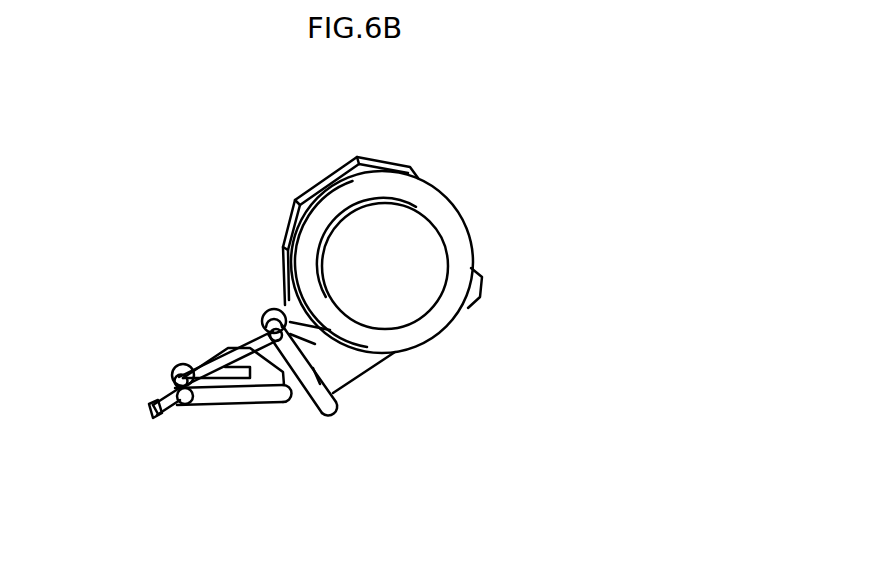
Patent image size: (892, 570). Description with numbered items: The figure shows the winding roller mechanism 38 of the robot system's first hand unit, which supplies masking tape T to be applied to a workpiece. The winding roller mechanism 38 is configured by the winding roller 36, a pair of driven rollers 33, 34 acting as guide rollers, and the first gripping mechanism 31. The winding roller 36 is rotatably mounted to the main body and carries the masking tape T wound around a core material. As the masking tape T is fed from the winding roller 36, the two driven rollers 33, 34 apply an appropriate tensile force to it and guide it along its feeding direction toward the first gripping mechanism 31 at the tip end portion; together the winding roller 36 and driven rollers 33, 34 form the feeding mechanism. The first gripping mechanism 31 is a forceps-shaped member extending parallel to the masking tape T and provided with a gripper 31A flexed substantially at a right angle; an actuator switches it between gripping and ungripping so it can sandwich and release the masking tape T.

The first gripping mechanism 31 is at (158, 402).
The gripper 31A is at (158, 418).
The driven roller 33 is at (173, 370).
The driven roller 34 is at (267, 310).
The winding roller 36 is at (448, 222).
The winding roller mechanism 38 is at (570, 232).
The masking tape T is at (281, 393).